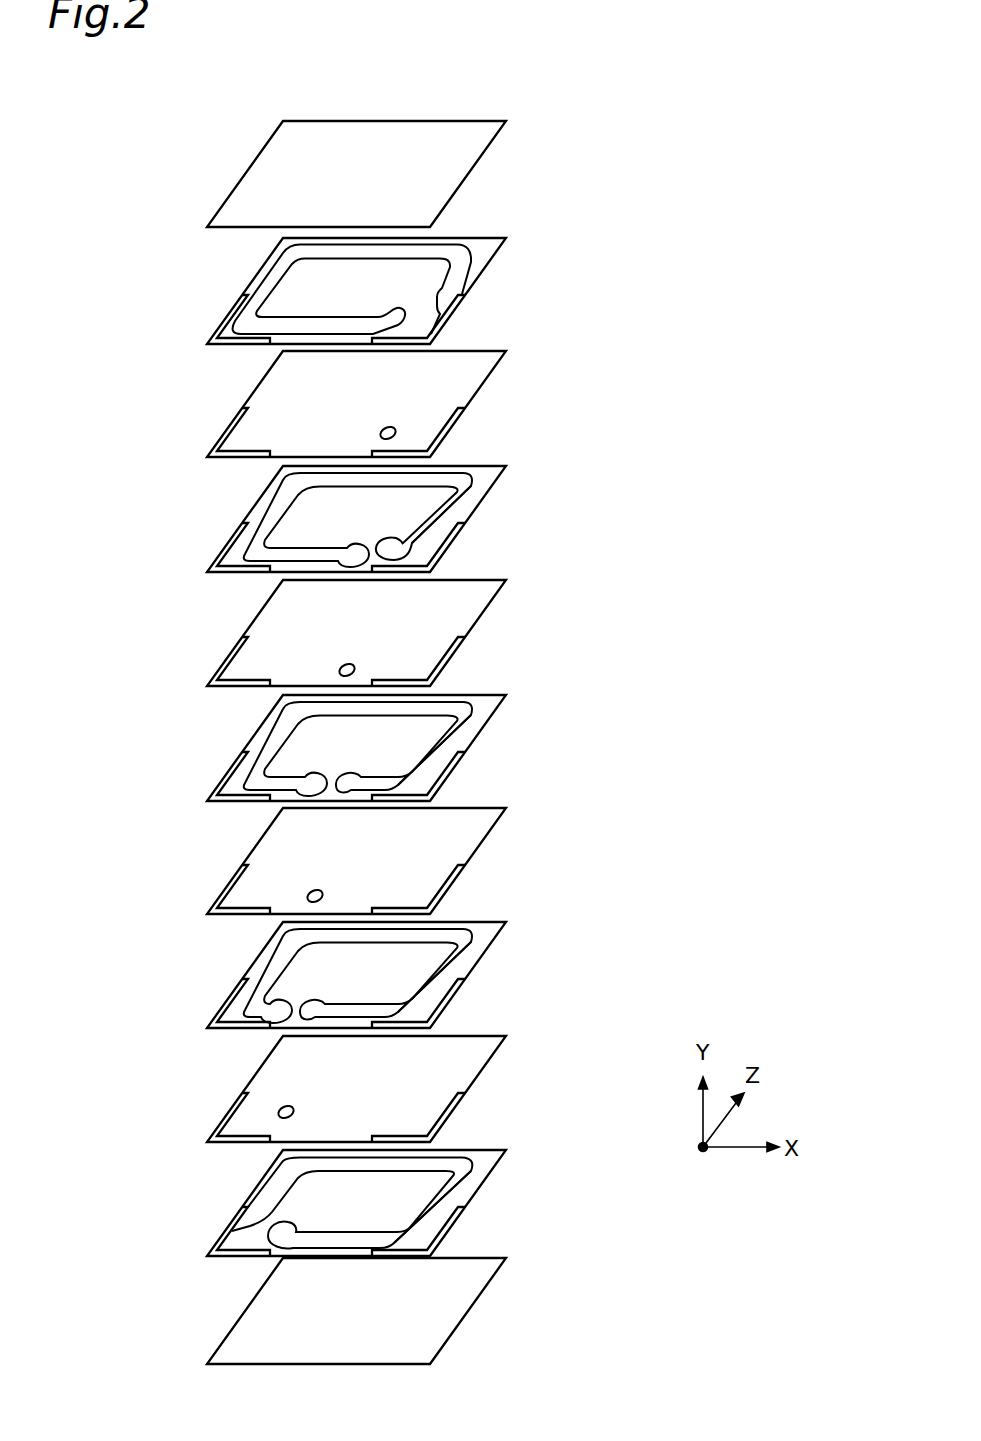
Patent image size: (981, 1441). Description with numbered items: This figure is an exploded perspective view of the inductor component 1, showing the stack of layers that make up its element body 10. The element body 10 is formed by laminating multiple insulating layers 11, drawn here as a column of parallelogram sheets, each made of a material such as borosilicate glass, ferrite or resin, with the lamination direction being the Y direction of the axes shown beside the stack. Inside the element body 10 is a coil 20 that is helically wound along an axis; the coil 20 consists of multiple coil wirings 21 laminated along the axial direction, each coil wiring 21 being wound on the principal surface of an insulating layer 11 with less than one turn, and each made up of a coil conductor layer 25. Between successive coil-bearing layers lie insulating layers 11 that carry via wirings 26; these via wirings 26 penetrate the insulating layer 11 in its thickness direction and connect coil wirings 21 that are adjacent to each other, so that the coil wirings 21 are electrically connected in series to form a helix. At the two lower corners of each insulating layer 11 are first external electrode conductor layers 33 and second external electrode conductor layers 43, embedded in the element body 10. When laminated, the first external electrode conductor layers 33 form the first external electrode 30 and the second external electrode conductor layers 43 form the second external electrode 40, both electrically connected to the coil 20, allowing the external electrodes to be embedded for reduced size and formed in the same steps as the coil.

The inductor component 1 is at (604, 268).
The element body 10 is at (270, 172).
The insulating layer 11 is at (438, 172).
The coil 20 is at (442, 231).
The coil wiring 21 is at (463, 485).
The coil conductor layer 25 is at (455, 503).
The via wiring 26 is at (392, 428).
The first external electrode 30 is at (212, 310).
The first external electrode conductor layer 33 is at (228, 326).
The second external electrode 40 is at (458, 322).
The second external electrode conductor layer 43 is at (443, 331).